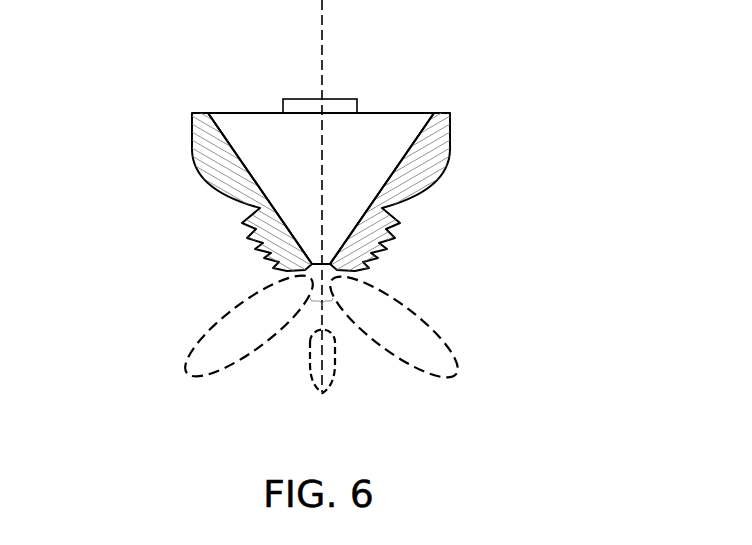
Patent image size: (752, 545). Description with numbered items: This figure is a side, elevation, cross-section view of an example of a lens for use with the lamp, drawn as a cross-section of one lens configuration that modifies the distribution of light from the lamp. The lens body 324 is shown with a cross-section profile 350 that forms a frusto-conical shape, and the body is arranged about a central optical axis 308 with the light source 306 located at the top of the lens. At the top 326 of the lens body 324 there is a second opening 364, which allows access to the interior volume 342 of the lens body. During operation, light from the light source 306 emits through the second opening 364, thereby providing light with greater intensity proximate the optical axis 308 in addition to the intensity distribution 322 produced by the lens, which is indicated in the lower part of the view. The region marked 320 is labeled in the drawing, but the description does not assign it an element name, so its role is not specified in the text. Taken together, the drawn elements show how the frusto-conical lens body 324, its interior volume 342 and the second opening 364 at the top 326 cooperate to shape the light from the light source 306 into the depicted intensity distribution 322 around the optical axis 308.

The light source 306 is at (348, 99).
The optical axis 308 is at (323, 19).
The spray plume region 320 is at (304, 352).
The intensity distribution 322 is at (454, 339).
The lens body 324 is at (503, 272).
The top 326 is at (345, 333).
The interior volume 342 is at (373, 129).
The cross-section profile 350 is at (188, 380).
The second opening 364 is at (322, 306).